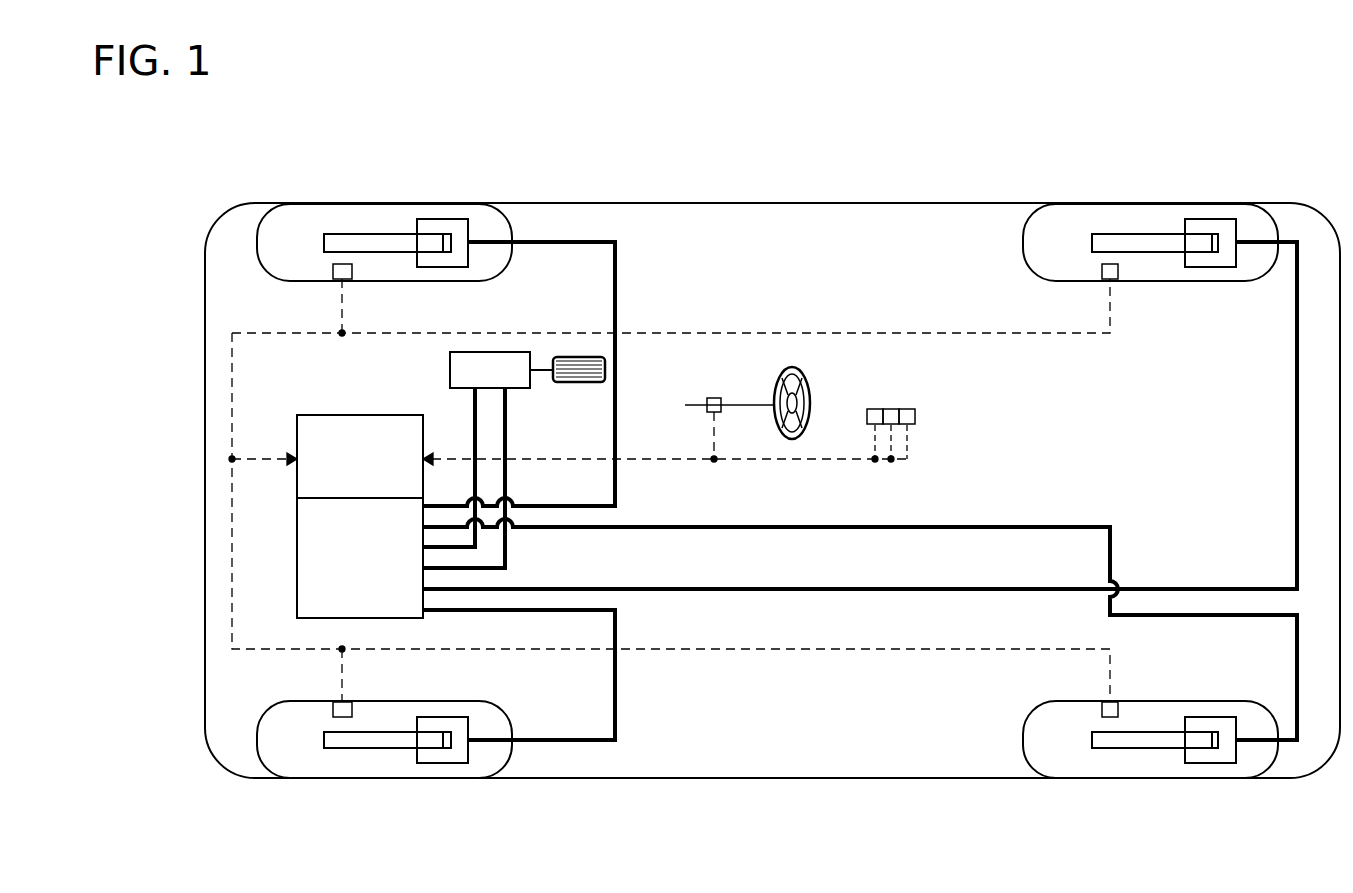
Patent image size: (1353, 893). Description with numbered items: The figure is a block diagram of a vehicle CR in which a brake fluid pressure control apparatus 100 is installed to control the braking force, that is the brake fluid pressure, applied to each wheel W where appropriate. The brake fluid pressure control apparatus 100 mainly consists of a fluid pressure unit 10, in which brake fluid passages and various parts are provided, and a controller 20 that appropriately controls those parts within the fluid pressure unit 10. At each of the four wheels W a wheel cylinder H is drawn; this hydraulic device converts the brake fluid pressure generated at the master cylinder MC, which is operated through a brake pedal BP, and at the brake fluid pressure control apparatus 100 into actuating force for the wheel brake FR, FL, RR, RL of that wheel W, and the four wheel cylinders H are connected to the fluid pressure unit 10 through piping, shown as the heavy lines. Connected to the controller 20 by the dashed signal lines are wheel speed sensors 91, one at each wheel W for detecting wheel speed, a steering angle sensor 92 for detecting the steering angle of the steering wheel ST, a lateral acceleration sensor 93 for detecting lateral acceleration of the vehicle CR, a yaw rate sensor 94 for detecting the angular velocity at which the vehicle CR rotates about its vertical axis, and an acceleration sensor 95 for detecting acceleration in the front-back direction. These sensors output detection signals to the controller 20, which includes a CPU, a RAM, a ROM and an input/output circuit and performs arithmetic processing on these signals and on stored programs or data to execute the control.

The vehicle CR is at (797, 193).
The brake fluid pressure control apparatus 100 is at (285, 522).
The fluid pressure unit 10 is at (297, 565).
The controller 20 is at (297, 438).
The wheel speed sensor 91 is at (344, 272).
The steering angle sensor 92 is at (714, 398).
The lateral acceleration sensor 93 is at (875, 409).
The yaw rate sensor 94 is at (891, 409).
The acceleration sensor 95 is at (916, 417).
The wheel brake FR is at (343, 242).
The wheel brake FL is at (342, 742).
The wheel brake RR is at (1110, 242).
The wheel brake RL is at (1110, 742).
The wheel W is at (382, 216).
The wheel cylinder H is at (444, 226).
The master cylinder MC is at (450, 370).
The brake pedal BP is at (584, 382).
The steering wheel ST is at (810, 400).